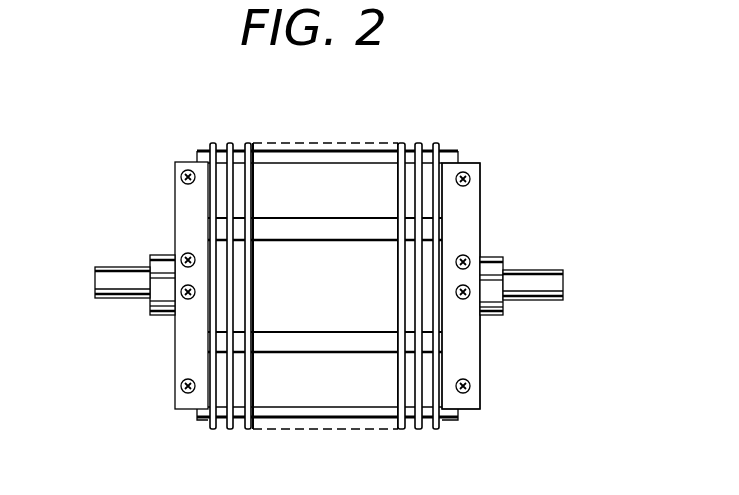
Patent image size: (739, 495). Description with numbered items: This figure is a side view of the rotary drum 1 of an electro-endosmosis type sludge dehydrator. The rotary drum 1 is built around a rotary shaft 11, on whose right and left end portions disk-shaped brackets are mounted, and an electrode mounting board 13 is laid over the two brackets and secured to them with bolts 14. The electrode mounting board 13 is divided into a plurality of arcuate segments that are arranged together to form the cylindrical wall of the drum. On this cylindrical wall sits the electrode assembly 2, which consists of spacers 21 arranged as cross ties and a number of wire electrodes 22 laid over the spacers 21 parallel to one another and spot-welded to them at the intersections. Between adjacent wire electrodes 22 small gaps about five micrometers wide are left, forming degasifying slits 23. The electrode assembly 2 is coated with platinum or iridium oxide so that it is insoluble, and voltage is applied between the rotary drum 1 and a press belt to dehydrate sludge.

The rotary drum 1 is at (490, 235).
The electrode assembly 2 is at (268, 142).
The rotary shaft 11 is at (532, 286).
The electrode mounting board 13 is at (470, 202).
The bolts 14 is at (183, 256).
The spacers 21 is at (359, 230).
The wire electrodes 22 is at (422, 157).
The degasifying slits 23 is at (238, 136).